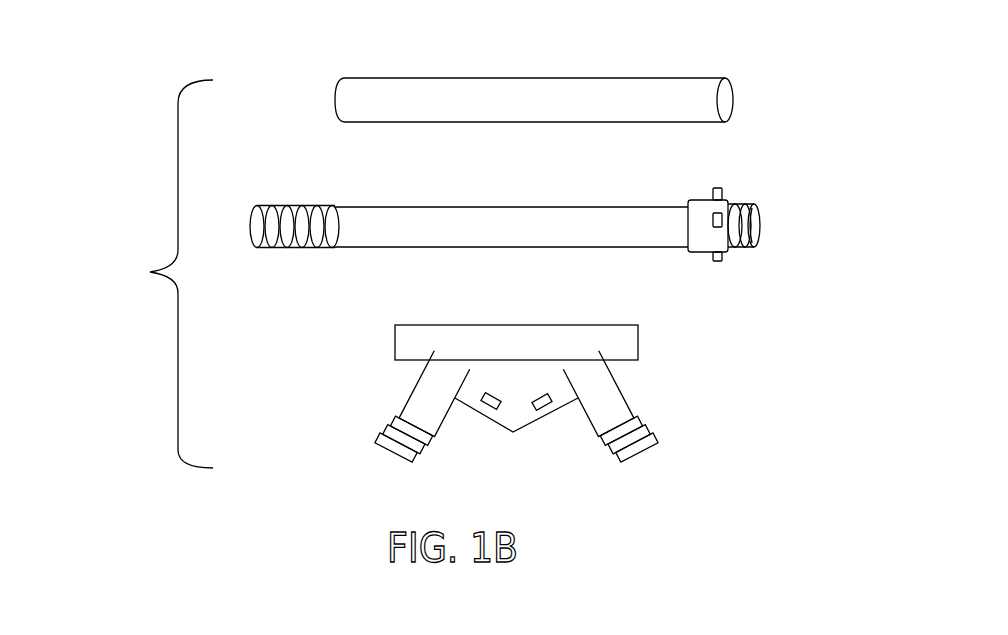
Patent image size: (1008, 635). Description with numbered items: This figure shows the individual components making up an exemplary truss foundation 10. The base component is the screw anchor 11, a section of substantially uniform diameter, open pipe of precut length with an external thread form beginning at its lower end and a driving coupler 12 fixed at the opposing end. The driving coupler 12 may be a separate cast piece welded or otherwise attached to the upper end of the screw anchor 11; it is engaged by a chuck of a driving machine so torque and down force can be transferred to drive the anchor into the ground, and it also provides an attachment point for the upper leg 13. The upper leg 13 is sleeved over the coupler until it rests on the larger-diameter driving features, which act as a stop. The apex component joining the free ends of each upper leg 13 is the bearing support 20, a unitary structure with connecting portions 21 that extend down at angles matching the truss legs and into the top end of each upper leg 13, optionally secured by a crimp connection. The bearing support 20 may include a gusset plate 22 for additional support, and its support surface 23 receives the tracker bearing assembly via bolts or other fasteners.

The truss foundation 10 is at (150, 272).
The screw anchor 11 is at (603, 207).
The driving coupler 12 is at (782, 201).
The upper leg 13 is at (660, 78).
The bearing support 20 is at (318, 313).
The connecting portions 21 is at (412, 388).
The gusset plate 22 is at (515, 433).
The support surface 23 is at (430, 313).